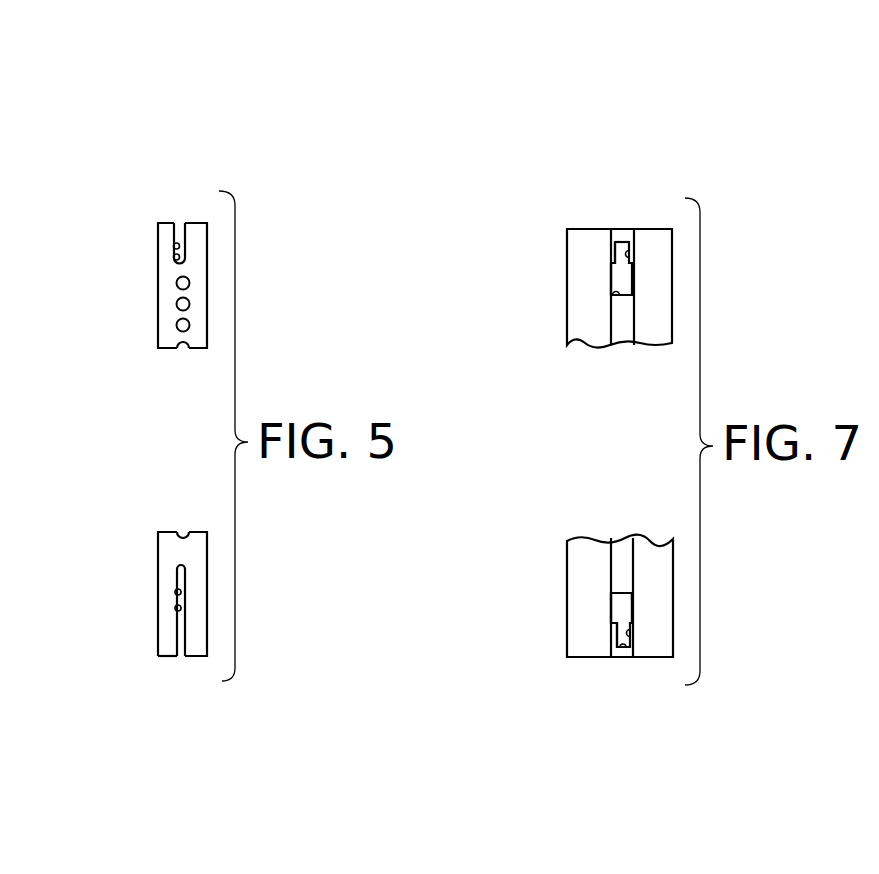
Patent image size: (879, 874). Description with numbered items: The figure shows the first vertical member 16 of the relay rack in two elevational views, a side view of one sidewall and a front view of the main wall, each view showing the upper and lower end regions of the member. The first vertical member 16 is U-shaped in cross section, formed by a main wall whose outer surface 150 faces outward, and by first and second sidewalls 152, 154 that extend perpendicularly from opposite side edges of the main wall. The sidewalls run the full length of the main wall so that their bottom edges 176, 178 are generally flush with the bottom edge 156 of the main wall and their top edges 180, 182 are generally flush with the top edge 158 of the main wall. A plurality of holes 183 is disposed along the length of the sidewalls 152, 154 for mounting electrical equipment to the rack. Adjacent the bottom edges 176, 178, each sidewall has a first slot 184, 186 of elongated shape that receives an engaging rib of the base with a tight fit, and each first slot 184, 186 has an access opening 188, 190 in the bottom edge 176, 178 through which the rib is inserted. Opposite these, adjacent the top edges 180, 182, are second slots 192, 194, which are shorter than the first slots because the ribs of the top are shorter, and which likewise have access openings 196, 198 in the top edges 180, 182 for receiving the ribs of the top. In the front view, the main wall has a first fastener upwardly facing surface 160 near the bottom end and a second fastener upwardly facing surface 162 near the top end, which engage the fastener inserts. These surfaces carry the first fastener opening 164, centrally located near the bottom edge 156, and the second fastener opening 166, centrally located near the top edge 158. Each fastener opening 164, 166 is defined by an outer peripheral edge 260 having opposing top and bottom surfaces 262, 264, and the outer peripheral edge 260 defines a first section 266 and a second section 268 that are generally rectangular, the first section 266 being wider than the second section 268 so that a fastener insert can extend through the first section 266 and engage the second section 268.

In FIG. 5, the first vertical member 16 is at (157, 88).
In FIG. 7, the first vertical member 16 is at (670, 138).
In FIG. 7, the outer surface 150 is at (622, 552).
In FIG. 5, the first sidewall 152 is at (146, 289).
In FIG. 5, the second sidewall 154 is at (146, 304).
In FIG. 7, the bottom edge 156 is at (578, 657).
In FIG. 7, the top edge 158 is at (583, 229).
In FIG. 7, the first fastener upwardly facing surface 160 is at (632, 597).
In FIG. 7, the second fastener upwardly facing surface 162 is at (625, 306).
In FIG. 7, the first fastener opening 164 is at (600, 628).
In FIG. 7, the second fastener opening 166 is at (600, 271).
In FIG. 5, the bottom edge of first sidewall 176 is at (156, 664).
In FIG. 5, the bottom edge of second sidewall 178 is at (168, 658).
In FIG. 5, the top edge of first sidewall 180 is at (165, 222).
In FIG. 5, the top edge of second sidewall 182 is at (160, 214).
In FIG. 5, the holes 183 is at (183, 327).
In FIG. 5, the first slot 184 is at (178, 592).
In FIG. 5, the first slot 186 is at (178, 608).
In FIG. 5, the access opening 188 is at (178, 658).
In FIG. 5, the access opening 190 is at (186, 658).
In FIG. 5, the second slot 192 is at (176, 257).
In FIG. 5, the second slot 194 is at (176, 246).
In FIG. 5, the access opening 196 is at (178, 232).
In FIG. 5, the access opening 198 is at (184, 226).
In FIG. 7, the outer peripheral edge 260 is at (629, 255).
In FIG. 7, the top surface 262 is at (611, 288).
In FIG. 7, the bottom surface 264 is at (614, 242).
In FIG. 7, the first section 266 is at (611, 277).
In FIG. 7, the second section 268 is at (615, 257).